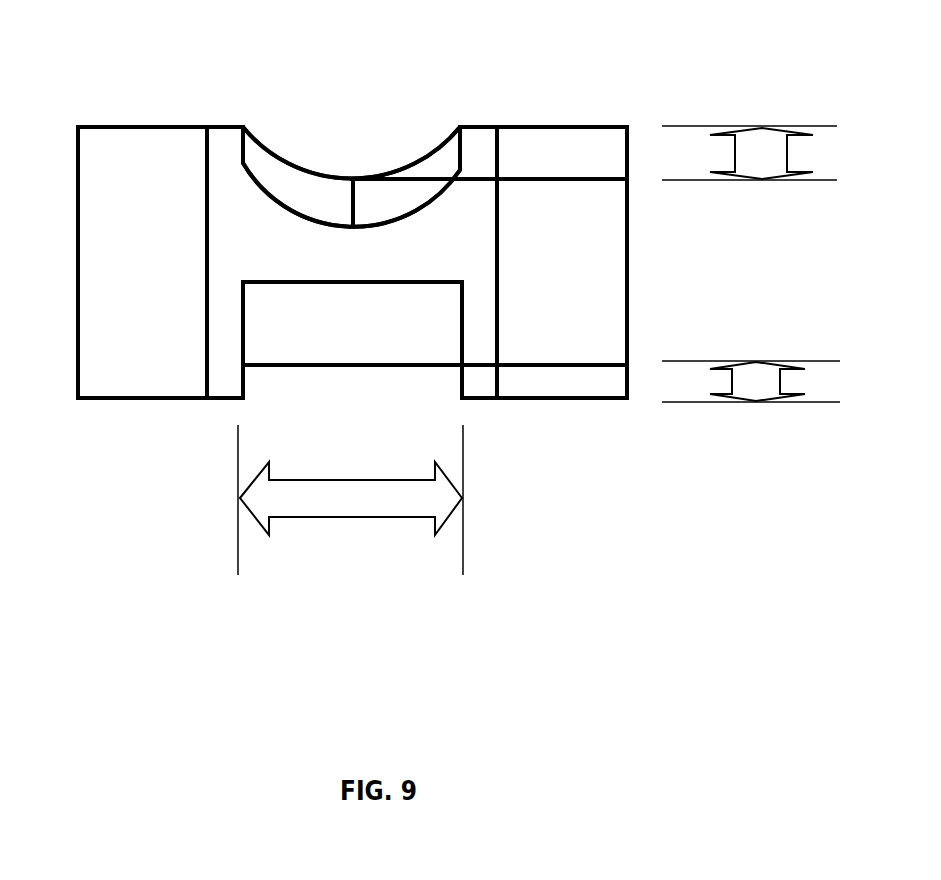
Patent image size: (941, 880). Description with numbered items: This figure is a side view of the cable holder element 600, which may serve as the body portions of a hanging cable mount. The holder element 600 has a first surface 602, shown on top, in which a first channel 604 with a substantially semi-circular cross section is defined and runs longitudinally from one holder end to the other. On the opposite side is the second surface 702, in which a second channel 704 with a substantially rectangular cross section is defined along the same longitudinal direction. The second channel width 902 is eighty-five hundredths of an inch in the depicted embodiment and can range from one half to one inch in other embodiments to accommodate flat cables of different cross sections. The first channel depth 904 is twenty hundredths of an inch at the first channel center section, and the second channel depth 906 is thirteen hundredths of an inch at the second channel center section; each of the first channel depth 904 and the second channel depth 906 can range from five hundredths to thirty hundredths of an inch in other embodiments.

The cable holder element 600 is at (665, 86).
The first surface 602 is at (160, 119).
The first channel 604 is at (372, 172).
The second surface 702 is at (553, 407).
The second channel 704 is at (345, 367).
The second channel width (SCW) 902 is at (353, 518).
The first channel depth (FCD) 904 is at (787, 156).
The second channel depth (SCD) 906 is at (780, 383).